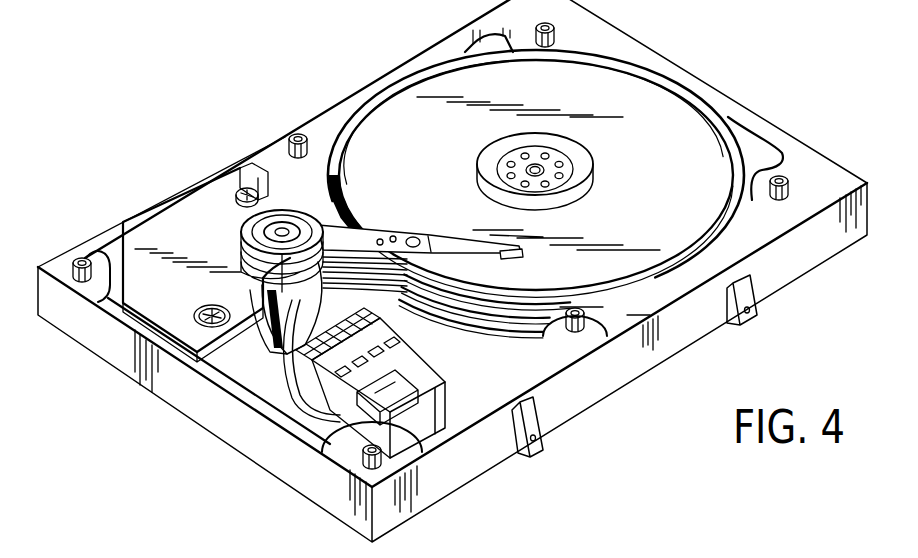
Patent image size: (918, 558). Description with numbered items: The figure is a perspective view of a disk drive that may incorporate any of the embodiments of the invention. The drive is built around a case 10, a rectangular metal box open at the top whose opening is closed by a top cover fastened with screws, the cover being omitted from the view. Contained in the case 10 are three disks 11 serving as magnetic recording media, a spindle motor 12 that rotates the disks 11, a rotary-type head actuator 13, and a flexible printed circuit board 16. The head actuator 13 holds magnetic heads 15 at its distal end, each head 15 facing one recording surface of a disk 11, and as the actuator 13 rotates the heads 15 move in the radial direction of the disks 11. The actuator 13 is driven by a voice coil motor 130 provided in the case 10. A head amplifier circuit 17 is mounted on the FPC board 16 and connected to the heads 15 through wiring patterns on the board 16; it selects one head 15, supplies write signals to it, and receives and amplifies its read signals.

The case 10 is at (797, 262).
The disks 11 is at (647, 107).
The spindle motor 12 is at (580, 172).
The rotary-type head actuator 13 is at (384, 226).
The magnetic heads 15 is at (505, 258).
The flexible printed circuit board 16 is at (302, 405).
The head amplifier circuit 17 is at (397, 373).
The voice coil motor 130 is at (143, 300).